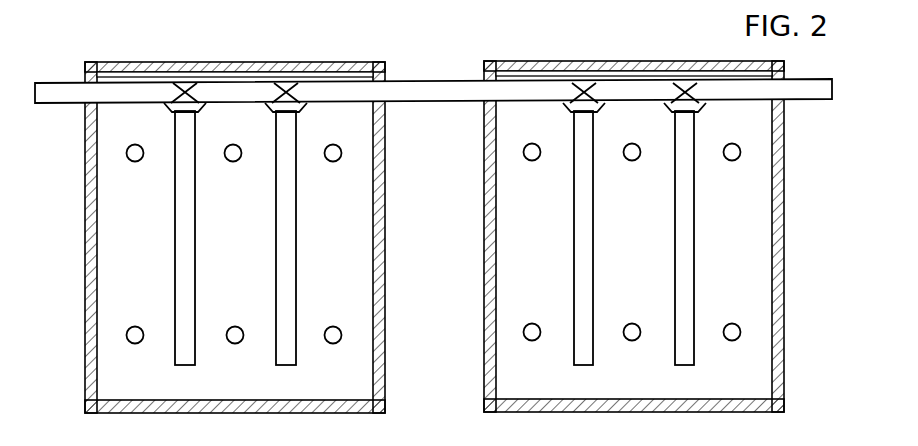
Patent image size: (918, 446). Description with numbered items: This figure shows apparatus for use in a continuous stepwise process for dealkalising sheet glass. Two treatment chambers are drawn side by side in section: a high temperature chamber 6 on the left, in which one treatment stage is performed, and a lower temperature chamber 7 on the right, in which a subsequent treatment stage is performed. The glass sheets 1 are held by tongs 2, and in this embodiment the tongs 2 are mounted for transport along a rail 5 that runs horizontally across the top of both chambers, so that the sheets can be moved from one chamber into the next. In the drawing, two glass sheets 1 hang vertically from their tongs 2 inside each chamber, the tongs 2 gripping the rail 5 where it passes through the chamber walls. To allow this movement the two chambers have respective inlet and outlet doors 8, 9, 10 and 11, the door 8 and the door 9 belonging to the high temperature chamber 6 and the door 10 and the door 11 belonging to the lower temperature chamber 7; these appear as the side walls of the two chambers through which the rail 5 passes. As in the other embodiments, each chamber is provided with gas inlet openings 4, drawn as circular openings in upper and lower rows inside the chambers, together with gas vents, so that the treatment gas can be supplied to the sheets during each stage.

The glass sheets 1 is at (280, 252).
The tongs 2 is at (270, 112).
The gas inlet openings 4 is at (135, 162).
The rail 5 is at (417, 82).
The high temperature chamber 6 is at (345, 62).
The lower temperature chamber 7 is at (524, 61).
The inlet door 8 is at (87, 258).
The outlet door 9 is at (383, 192).
The inlet door 10 is at (486, 258).
The outlet door 11 is at (783, 190).